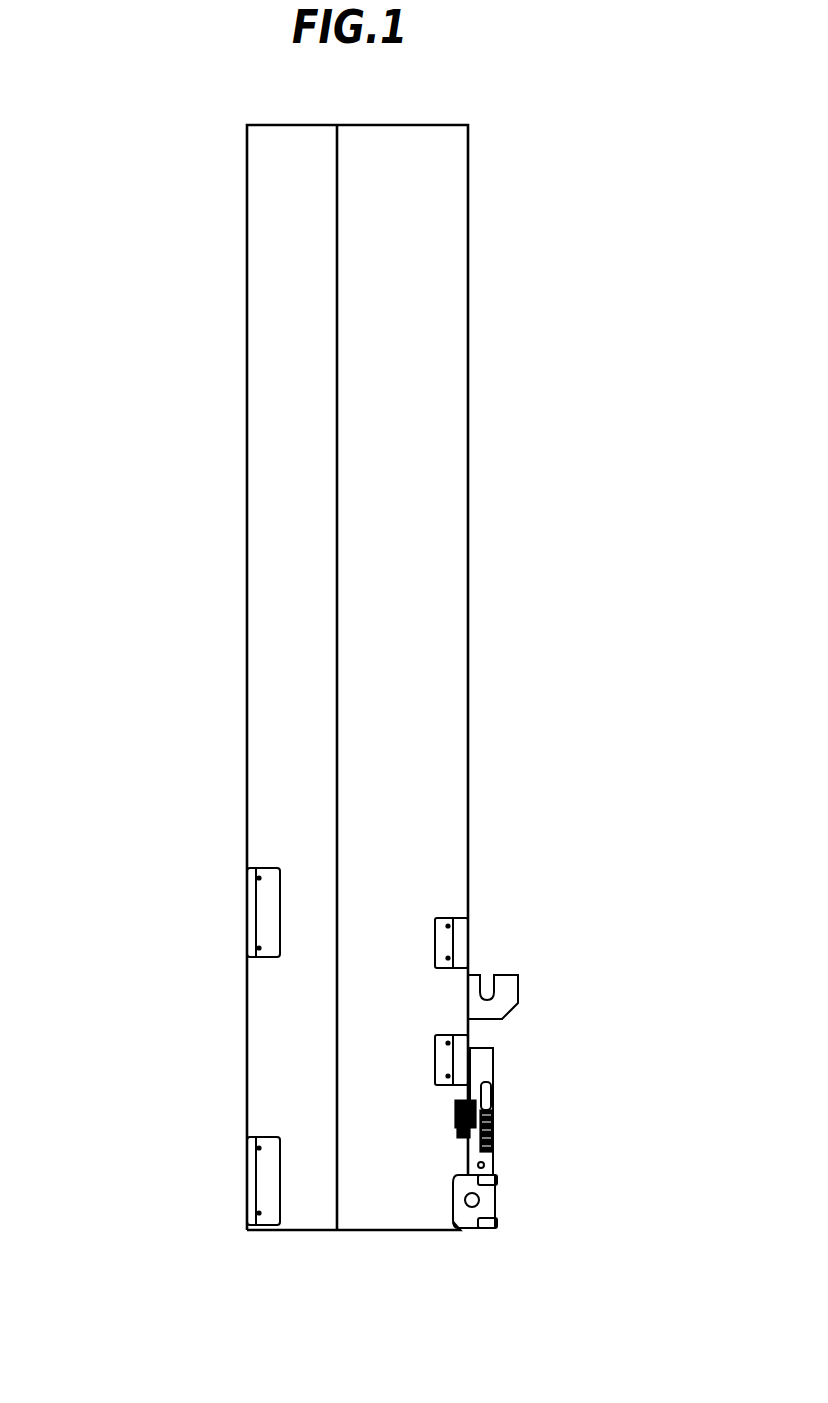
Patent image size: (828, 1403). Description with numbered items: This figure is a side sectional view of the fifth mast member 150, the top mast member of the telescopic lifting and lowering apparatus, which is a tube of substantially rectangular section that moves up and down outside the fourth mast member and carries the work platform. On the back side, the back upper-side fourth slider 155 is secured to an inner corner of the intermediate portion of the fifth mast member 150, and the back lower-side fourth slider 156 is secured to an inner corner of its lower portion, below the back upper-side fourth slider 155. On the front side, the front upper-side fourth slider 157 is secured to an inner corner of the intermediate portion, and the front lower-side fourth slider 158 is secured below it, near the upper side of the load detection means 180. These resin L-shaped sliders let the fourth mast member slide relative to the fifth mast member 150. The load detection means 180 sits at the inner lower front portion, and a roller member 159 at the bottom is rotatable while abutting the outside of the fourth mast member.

The fifth mast member 150 is at (246, 383).
The back upper-side fourth slider 155 is at (265, 905).
The back lower-side fourth slider 156 is at (265, 1180).
The front upper-side fourth slider 157 is at (460, 940).
The front lower-side fourth slider 158 is at (460, 1048).
The roller member 159 is at (492, 1208).
The load detection means 180 is at (504, 1117).